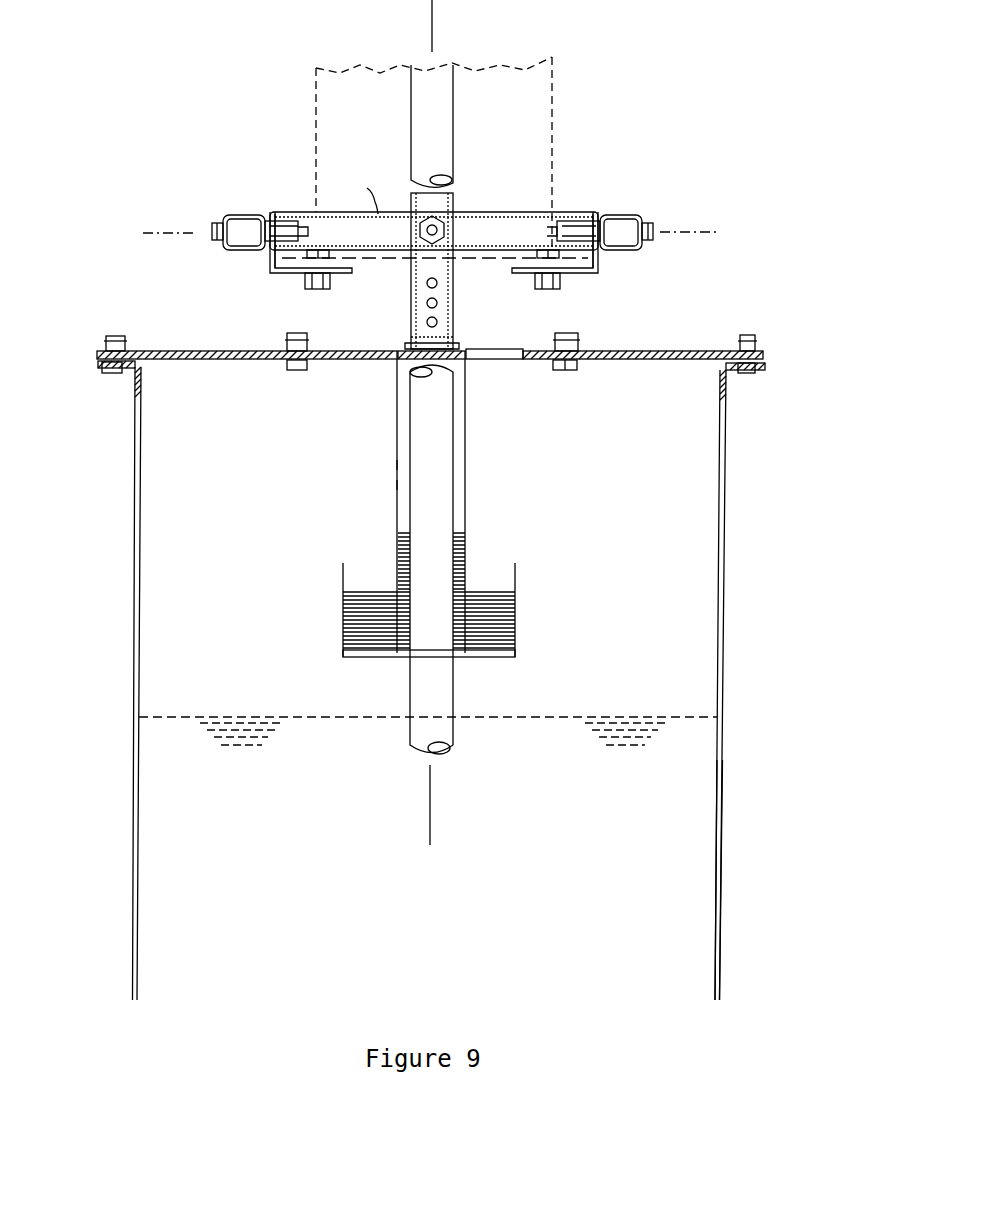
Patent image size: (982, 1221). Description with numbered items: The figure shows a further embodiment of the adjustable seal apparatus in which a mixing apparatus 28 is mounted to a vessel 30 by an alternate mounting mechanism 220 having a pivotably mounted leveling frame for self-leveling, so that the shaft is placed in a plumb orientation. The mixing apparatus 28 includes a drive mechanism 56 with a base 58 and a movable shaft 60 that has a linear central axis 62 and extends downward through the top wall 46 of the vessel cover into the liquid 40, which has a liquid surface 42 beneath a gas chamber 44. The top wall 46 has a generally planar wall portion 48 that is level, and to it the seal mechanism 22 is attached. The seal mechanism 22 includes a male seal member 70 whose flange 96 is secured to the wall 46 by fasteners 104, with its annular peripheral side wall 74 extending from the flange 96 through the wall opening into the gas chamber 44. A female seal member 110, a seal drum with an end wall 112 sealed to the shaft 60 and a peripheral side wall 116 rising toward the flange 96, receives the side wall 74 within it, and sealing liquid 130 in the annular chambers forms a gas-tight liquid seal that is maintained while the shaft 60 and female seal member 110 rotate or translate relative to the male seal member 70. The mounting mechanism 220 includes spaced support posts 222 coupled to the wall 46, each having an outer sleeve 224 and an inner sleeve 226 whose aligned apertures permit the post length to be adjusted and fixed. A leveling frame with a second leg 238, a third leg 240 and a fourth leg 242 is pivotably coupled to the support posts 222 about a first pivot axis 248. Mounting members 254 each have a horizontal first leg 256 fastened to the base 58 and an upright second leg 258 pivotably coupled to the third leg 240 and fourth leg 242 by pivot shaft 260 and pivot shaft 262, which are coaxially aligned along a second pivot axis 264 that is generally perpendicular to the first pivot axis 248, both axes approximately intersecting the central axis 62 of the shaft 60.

The mixing apparatus 28 is at (580, 35).
The drive mechanism 56 is at (557, 78).
The movable shaft 60 is at (455, 115).
The second leg 238 is at (285, 212).
The third leg 240 is at (217, 233).
The inner sleeve 226 is at (412, 205).
The base 58 is at (358, 197).
The first pivot axis 248 is at (436, 228).
The fourth leg 242 is at (627, 237).
The second pivot axis 264 is at (707, 230).
The mounting mechanism 220 is at (676, 168).
The pivot shaft 260 is at (250, 240).
The second leg 258 is at (645, 295).
The mounting member 254 is at (426, 275).
The first leg 256 is at (341, 277).
The support post 222 is at (472, 271).
The outer sleeve 224 is at (458, 337).
The pivot shaft 262 is at (620, 235).
The top wall 46 is at (714, 346).
The planar wall portion 48 is at (651, 351).
The fasteners 104 is at (572, 367).
The flange 96 is at (502, 360).
The annular peripheral side wall 74 is at (470, 447).
The seal mechanism 22 is at (516, 468).
The male seal member 70 is at (358, 484).
The vessel 30 is at (728, 566).
The gas chamber 44 is at (700, 632).
The liquid 40 is at (700, 800).
The liquid surface 42 is at (603, 715).
The female seal member 110 is at (417, 621).
The peripheral side wall 116 is at (517, 615).
The sealing liquid 130 is at (365, 640).
The end wall 112 is at (494, 656).
The central axis 62 is at (429, 815).